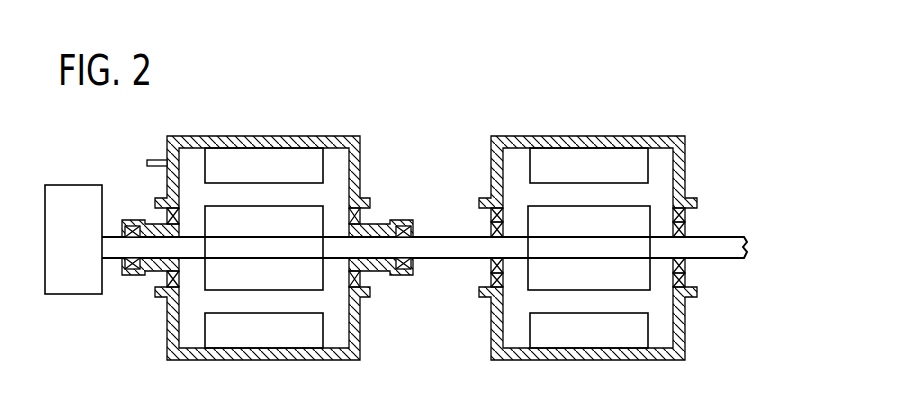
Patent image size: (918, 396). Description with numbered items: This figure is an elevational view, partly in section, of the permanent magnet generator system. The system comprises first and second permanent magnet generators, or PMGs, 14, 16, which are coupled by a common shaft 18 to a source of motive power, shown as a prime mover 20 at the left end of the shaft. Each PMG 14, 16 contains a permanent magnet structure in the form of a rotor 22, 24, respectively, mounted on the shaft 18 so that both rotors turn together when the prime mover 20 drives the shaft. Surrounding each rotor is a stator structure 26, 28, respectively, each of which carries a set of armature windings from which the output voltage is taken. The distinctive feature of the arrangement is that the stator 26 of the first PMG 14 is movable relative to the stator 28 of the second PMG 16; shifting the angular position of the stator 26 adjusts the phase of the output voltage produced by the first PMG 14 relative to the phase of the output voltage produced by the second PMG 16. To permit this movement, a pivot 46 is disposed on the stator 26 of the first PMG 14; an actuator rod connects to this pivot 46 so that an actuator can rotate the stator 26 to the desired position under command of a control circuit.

The first permanent magnet generator 14 is at (341, 142).
The second permanent magnet generator 16 is at (651, 143).
The shaft 18 is at (115, 252).
The prime mover 20 is at (82, 195).
The rotor 22 is at (268, 257).
The rotor 24 is at (591, 257).
The stator 26 is at (249, 158).
The stator 28 is at (561, 162).
The pivot 46 is at (156, 160).